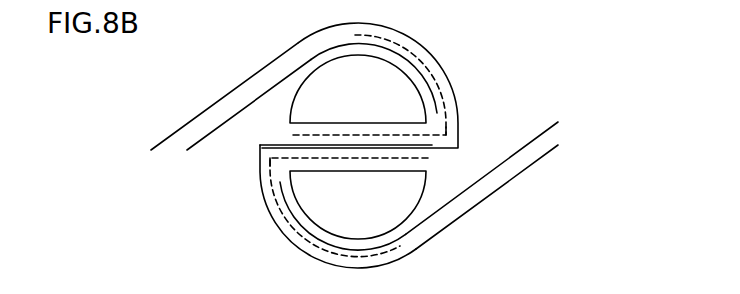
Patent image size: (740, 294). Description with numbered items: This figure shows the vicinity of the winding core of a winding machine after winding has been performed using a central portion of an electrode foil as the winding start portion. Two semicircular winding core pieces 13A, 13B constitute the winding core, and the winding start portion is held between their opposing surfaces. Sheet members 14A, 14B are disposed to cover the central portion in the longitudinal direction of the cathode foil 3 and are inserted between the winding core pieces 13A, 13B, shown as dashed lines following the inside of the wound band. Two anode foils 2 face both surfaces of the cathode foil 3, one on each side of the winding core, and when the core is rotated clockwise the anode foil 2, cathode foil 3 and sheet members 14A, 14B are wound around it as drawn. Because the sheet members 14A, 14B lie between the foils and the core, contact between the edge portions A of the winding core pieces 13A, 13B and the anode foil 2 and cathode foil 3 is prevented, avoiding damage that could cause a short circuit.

The anode foil 2 is at (230, 117).
The cathode foil 3 is at (258, 192).
The winding core piece 13A is at (390, 210).
The winding core piece 13B is at (322, 87).
The sheet member 14A is at (292, 230).
The sheet member 14B is at (428, 70).
The edge portion A is at (448, 127).